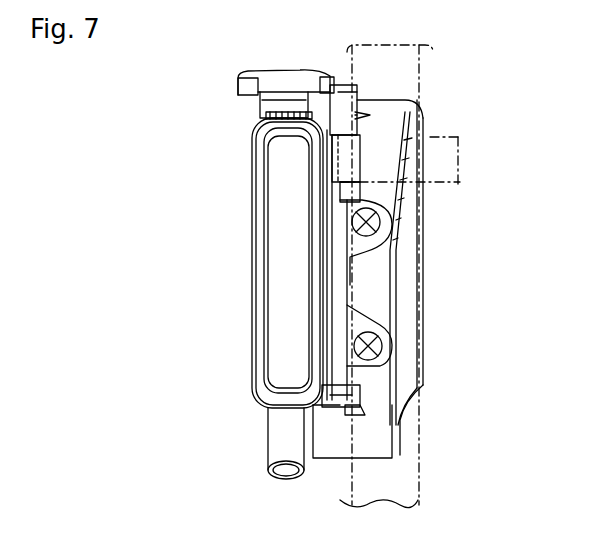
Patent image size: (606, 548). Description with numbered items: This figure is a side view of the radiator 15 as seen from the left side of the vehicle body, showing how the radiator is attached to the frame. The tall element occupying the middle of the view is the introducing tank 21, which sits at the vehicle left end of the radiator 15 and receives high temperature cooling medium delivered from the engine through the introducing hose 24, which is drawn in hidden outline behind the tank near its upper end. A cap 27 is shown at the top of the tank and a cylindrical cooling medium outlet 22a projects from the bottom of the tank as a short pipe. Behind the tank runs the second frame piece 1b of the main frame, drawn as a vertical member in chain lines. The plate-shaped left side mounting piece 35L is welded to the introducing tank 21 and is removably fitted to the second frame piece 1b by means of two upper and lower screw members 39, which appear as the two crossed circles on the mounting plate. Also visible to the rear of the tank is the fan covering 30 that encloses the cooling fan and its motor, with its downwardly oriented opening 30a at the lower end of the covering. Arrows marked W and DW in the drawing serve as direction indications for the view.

The second frame piece 1b is at (420, 67).
The radiator 15 is at (252, 273).
The introducing tank 21 is at (285, 213).
The cooling medium outlet 22a is at (278, 481).
The introducing hose 24 is at (433, 134).
The cap 27 is at (288, 80).
The fan covering 30 is at (422, 302).
The downwardly oriented opening 30a is at (338, 452).
The left side mounting piece 35L is at (350, 283).
The screw member 39 is at (380, 222).
The vehicle width direction W is at (205, 263).
The downward direction DW is at (363, 452).